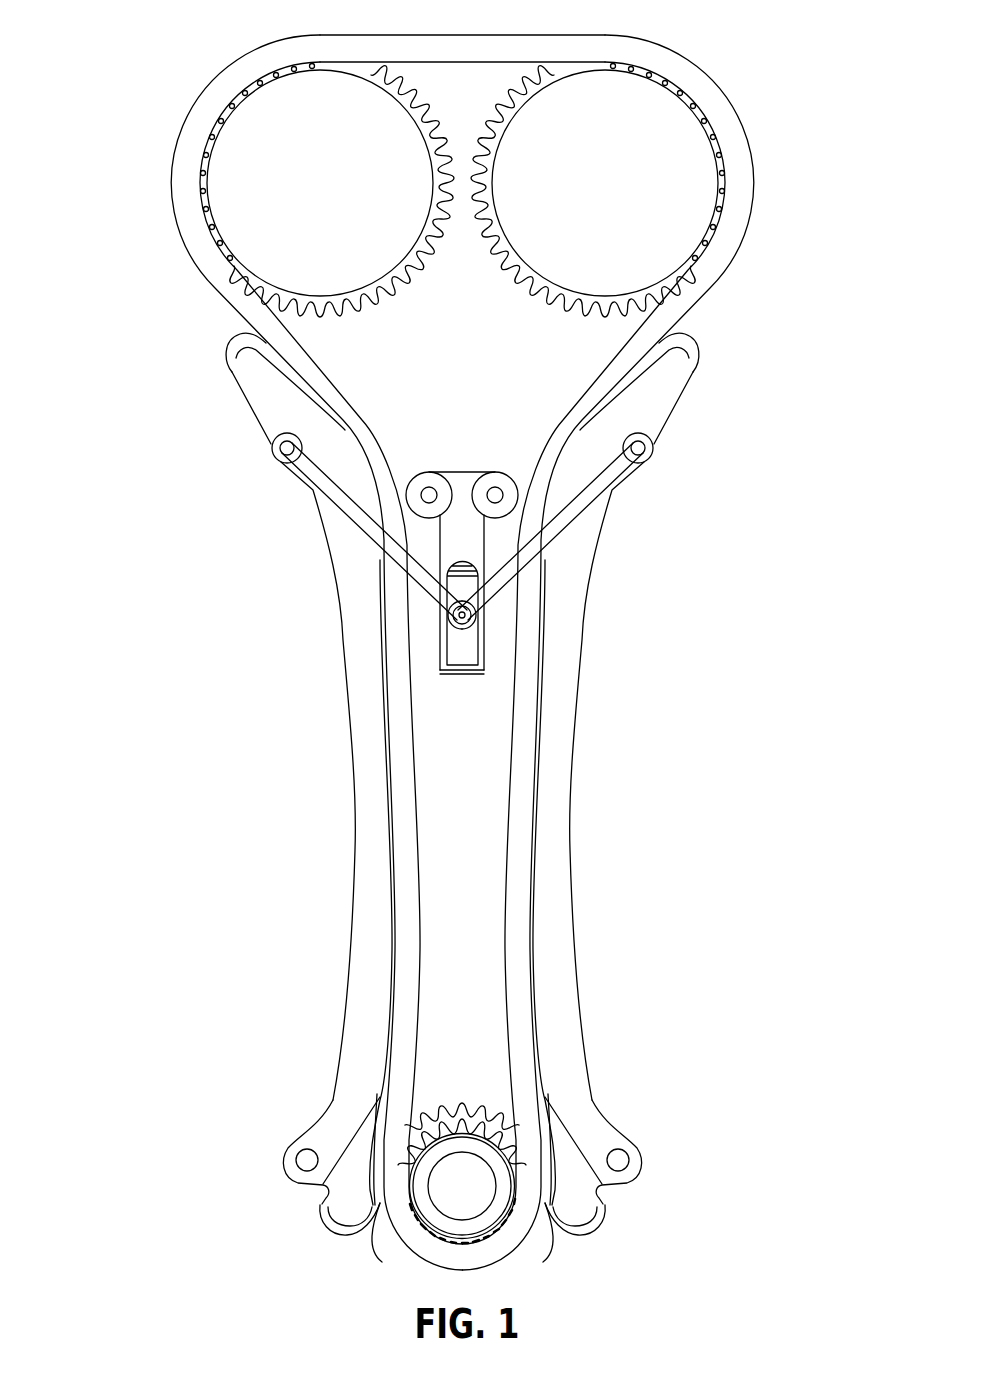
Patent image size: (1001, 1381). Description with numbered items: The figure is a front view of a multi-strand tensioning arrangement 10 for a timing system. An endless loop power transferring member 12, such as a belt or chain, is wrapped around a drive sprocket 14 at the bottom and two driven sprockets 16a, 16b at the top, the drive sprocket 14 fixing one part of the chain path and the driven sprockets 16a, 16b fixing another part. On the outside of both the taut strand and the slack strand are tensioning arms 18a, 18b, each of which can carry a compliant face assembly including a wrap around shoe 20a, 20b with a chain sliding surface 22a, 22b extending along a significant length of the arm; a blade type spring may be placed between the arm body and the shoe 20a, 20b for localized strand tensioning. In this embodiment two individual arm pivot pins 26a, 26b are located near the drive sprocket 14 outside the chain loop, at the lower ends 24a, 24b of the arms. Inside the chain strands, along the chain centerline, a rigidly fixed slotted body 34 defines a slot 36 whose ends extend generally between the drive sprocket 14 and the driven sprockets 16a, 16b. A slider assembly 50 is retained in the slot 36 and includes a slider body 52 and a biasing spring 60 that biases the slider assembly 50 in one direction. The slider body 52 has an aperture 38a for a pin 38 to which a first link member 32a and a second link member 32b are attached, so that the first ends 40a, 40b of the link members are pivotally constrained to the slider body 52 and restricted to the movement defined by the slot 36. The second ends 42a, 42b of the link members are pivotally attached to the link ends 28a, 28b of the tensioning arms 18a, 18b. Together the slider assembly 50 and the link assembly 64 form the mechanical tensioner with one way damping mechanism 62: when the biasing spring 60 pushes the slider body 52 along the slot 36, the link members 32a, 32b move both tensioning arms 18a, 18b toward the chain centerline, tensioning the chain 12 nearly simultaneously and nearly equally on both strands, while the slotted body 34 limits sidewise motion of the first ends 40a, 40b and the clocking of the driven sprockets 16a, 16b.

The multi-strand tensioning arrangement 10 is at (92, 64).
The endless loop power transferring member 12 is at (197, 108).
The drive sprocket 14 is at (468, 1196).
The driven sprocket 16a is at (240, 187).
The driven sprocket 16b is at (695, 171).
The first tensioning arm 18a is at (366, 947).
The second tensioning arm 18b is at (559, 947).
The wrap around shoe 20a is at (235, 341).
The wrap around shoe 20b is at (690, 338).
The chain sliding surface 22a is at (377, 1232).
The chain sliding surface 22b is at (548, 1232).
The pivot bracket 24a is at (314, 1133).
The pivot bracket 24b is at (611, 1133).
The arm pivot pin 26a is at (307, 1160).
The arm pivot pin 26b is at (618, 1160).
The link end 28a is at (268, 425).
The link end 28b is at (672, 406).
The first link member 32a is at (337, 510).
The second link member 32b is at (605, 521).
The slotted body 34 is at (457, 473).
The slot 36 is at (470, 665).
The pin 38 is at (437, 595).
The aperture 38a is at (445, 662).
The first end of first link member 40a is at (445, 619).
The first end of second link member 40b is at (470, 636).
The second end of first link member 42a is at (276, 449).
The second end of second link member 42b is at (653, 450).
The slider assembly 50 is at (452, 548).
The slider body 52 is at (463, 604).
The biasing spring 60 is at (460, 572).
The mechanical tensioner with one way damping mechanism 62 is at (458, 712).
The link assembly 64 is at (522, 532).